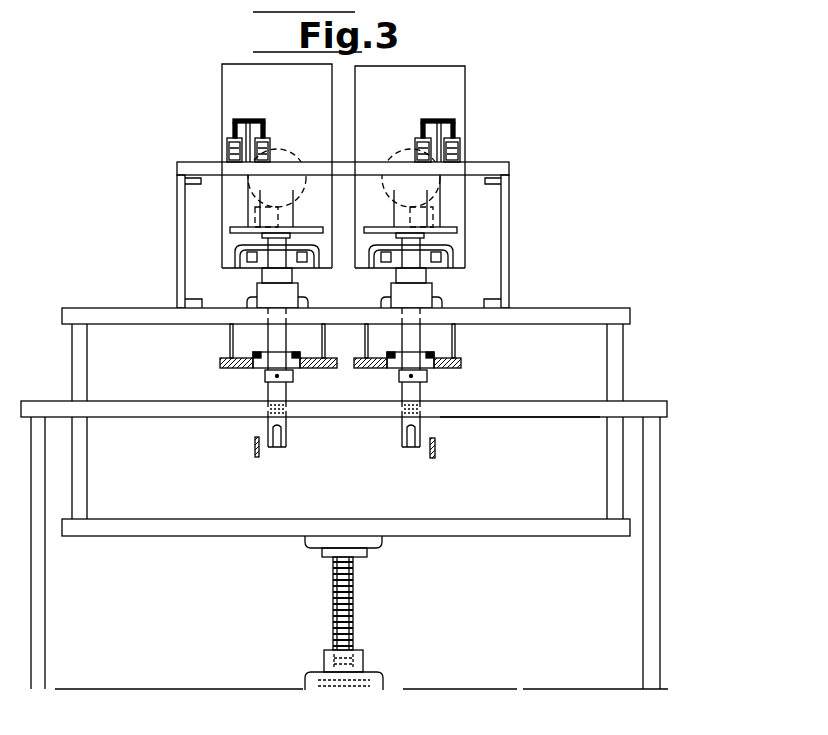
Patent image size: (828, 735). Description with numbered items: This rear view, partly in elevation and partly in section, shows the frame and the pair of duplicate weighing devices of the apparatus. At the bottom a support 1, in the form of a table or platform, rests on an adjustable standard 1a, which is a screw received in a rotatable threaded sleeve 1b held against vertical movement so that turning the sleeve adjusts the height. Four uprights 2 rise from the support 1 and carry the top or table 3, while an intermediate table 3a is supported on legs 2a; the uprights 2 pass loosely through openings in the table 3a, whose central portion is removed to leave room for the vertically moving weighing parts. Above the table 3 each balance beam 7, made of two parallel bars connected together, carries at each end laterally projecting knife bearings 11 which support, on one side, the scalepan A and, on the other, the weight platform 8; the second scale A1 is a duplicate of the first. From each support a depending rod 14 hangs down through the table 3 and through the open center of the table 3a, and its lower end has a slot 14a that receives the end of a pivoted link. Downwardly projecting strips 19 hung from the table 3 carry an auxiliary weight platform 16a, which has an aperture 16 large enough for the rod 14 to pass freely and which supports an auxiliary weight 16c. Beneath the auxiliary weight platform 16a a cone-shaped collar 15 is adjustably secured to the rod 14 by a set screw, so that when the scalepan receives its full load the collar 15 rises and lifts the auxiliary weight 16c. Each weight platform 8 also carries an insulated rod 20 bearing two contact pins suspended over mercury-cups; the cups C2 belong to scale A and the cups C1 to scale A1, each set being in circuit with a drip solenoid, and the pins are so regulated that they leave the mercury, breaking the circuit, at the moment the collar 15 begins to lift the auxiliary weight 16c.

The scalepan A is at (290, 78).
The scale A1 is at (403, 97).
The mercury-cups C2 is at (233, 119).
The mercury-cups C1 is at (424, 140).
The insulated rod 20 is at (232, 212).
The weight platform 8 is at (303, 227).
The knife bearings 11 is at (248, 258).
The balance beam 7 is at (250, 281).
The table top 3 is at (562, 308).
The table 3a is at (545, 418).
The downwardly projecting strips 19 is at (455, 345).
The aperture 16 is at (272, 350).
The auxiliary weight platform 16a is at (462, 357).
The auxiliary weight 16c is at (385, 350).
The cone-shaped collar 15 is at (265, 372).
The depending rod 14 is at (262, 383).
The slot 14a is at (277, 450).
The uprights 2 is at (623, 380).
The legs 2a is at (660, 480).
The support 1 is at (235, 536).
The adjustable standard 1a is at (353, 608).
The rotatable threaded sleeve 1b is at (364, 665).